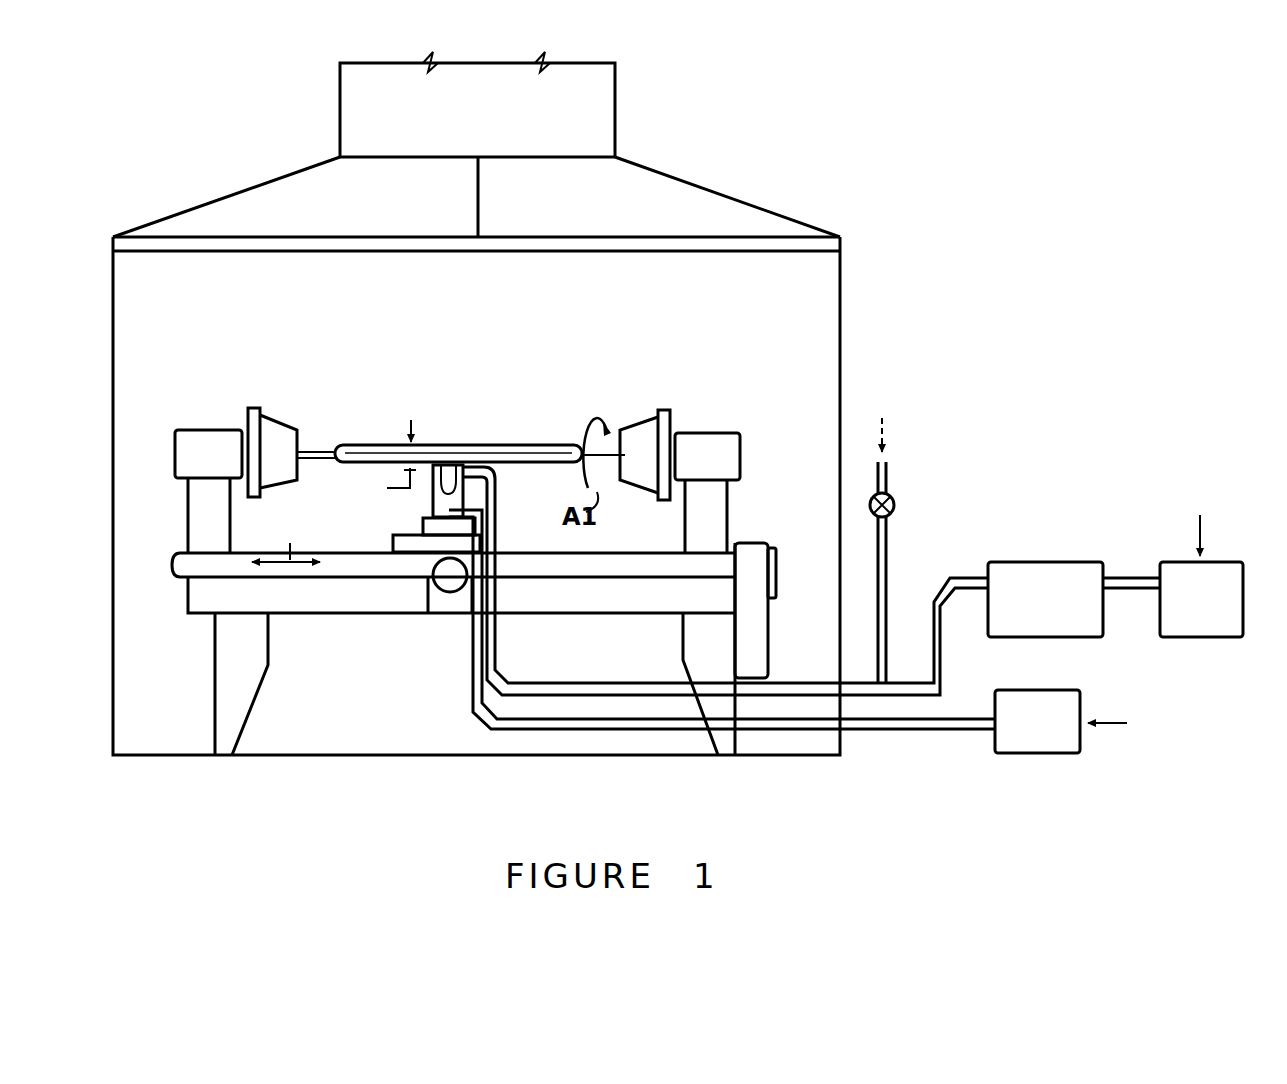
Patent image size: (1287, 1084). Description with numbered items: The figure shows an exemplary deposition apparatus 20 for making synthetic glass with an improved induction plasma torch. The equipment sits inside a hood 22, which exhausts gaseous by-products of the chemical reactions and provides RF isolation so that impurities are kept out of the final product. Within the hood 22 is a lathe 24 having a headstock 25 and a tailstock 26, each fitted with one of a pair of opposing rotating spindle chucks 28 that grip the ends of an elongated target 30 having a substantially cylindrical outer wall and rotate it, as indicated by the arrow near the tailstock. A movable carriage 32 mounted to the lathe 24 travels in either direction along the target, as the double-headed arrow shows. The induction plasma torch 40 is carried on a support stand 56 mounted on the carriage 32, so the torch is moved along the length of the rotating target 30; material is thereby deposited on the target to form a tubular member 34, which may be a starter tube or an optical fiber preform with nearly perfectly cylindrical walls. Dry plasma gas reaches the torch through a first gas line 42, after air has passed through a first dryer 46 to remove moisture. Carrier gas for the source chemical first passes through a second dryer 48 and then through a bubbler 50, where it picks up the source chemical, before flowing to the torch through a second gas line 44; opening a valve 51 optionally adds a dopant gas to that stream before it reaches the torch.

The apparatus 20 is at (992, 306).
The hood 22 is at (847, 342).
The lathe 24 is at (685, 402).
The headstock 25 is at (205, 430).
The tailstock 26 is at (724, 433).
The spindle chucks 28 is at (254, 408).
The target 30 is at (308, 452).
The carriage 32 is at (425, 568).
The tubular member 34 is at (355, 445).
The induction plasma torch 40 is at (466, 500).
The first gas line 42 is at (540, 729).
The second gas line 44 is at (545, 683).
The first dryer 46 is at (1040, 753).
The second dryer 48 is at (1208, 637).
The bubbler 50 is at (1042, 562).
The valve 51 is at (893, 498).
The support stand 56 is at (423, 527).